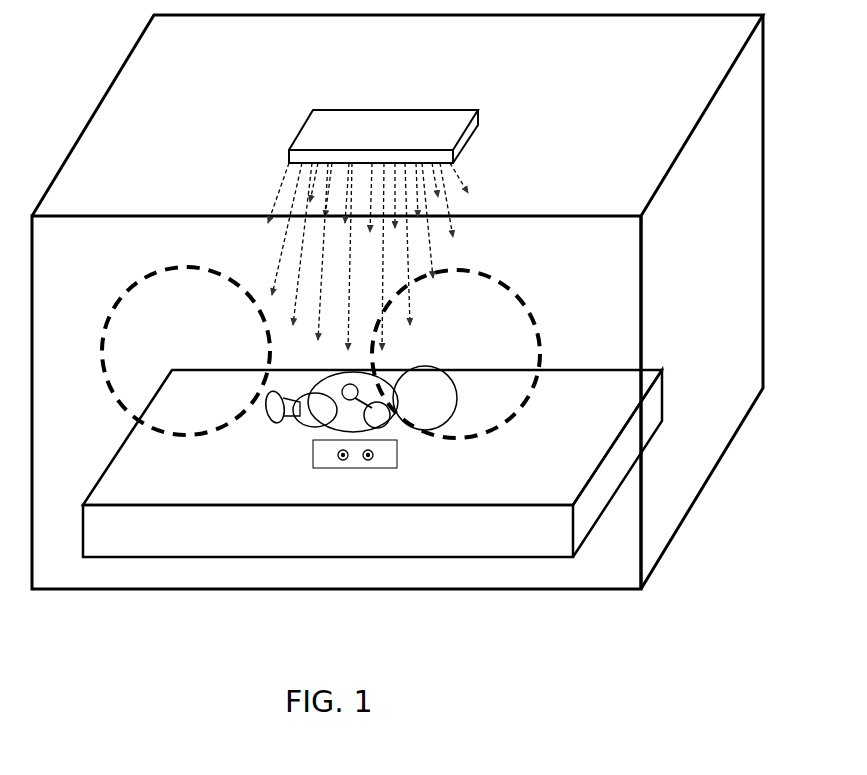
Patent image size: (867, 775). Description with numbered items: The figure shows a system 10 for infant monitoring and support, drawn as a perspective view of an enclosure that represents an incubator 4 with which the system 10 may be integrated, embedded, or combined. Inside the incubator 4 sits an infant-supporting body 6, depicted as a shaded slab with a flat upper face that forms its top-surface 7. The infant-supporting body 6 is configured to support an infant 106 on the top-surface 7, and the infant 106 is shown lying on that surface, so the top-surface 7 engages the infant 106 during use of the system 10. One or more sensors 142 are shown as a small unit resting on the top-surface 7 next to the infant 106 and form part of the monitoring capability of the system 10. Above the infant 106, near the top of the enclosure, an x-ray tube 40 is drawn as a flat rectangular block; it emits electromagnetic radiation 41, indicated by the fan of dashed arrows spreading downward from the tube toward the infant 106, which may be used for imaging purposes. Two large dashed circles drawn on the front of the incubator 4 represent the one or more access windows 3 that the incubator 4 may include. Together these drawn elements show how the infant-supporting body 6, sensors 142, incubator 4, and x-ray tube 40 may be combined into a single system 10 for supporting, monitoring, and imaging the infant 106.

The system 10 is at (250, 566).
The incubator 4 is at (655, 544).
The infant-supporting body 6 is at (112, 537).
The top-surface 7 is at (137, 462).
The x-ray tube 40 is at (322, 128).
The electromagnetic radiation 41 is at (361, 256).
The infant 106 is at (360, 399).
The sensors 142 is at (313, 456).
The access windows 3 is at (320, 352).